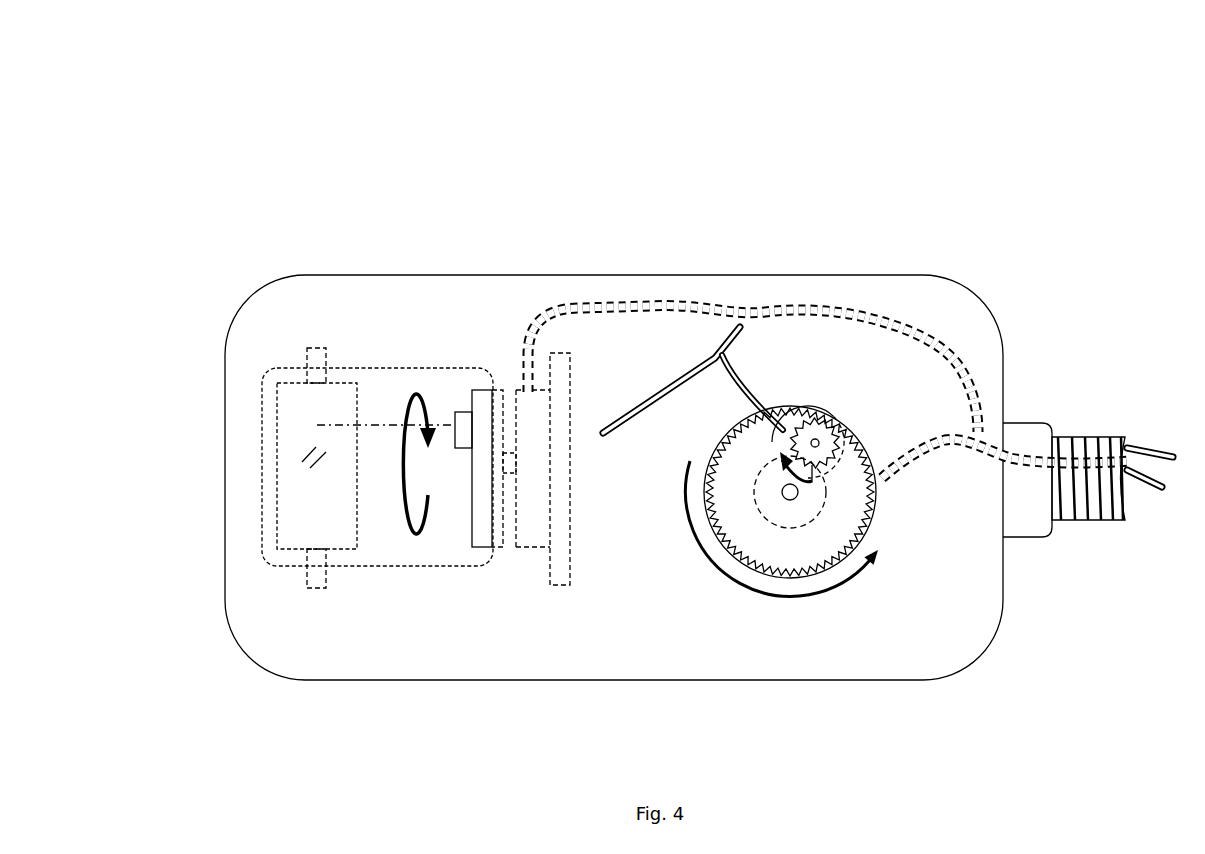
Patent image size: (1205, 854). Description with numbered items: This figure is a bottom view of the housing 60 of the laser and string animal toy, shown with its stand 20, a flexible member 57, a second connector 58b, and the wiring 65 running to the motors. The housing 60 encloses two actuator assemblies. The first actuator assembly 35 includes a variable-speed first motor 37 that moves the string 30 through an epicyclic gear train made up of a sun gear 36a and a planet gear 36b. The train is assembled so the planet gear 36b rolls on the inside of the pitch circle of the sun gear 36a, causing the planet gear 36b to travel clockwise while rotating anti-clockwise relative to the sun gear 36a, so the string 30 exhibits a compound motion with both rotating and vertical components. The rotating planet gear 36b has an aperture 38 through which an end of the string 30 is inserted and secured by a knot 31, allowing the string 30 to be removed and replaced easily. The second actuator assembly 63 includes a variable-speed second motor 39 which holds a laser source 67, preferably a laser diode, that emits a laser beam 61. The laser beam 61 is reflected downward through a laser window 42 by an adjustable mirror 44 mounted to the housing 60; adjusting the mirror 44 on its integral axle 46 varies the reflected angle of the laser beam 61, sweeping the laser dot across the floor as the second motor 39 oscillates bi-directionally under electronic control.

The stand 20 is at (256, 161).
The string 30 is at (650, 403).
The knot 31 is at (795, 410).
The first actuator assembly 35 is at (806, 372).
The sun gear 36a is at (866, 446).
The planet gear 36b is at (795, 432).
The first motor 37 is at (803, 527).
The aperture 38 is at (787, 408).
The second motor 39 is at (538, 510).
The laser window 42 is at (410, 568).
The mirror 44 is at (338, 550).
The axle 46 is at (308, 383).
The flexible member 57 is at (1080, 520).
The second connector 58b is at (1027, 537).
The housing 60 is at (950, 672).
The laser beam 61 is at (393, 424).
The second actuator assembly 63 is at (502, 366).
The wiring 65 is at (1150, 482).
The laser source 67 is at (483, 407).